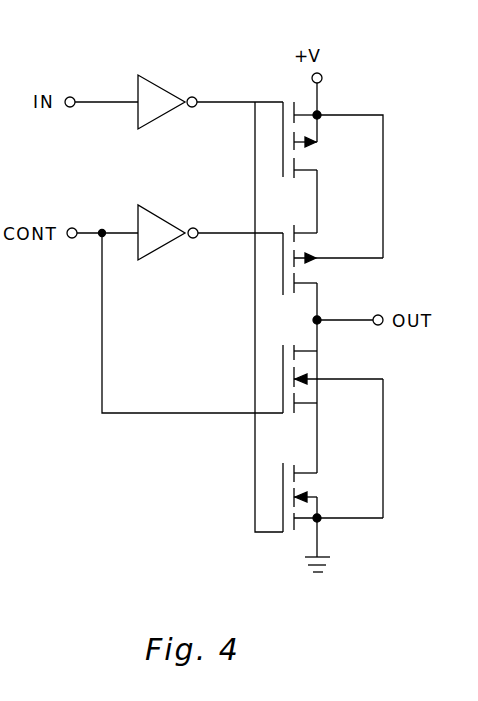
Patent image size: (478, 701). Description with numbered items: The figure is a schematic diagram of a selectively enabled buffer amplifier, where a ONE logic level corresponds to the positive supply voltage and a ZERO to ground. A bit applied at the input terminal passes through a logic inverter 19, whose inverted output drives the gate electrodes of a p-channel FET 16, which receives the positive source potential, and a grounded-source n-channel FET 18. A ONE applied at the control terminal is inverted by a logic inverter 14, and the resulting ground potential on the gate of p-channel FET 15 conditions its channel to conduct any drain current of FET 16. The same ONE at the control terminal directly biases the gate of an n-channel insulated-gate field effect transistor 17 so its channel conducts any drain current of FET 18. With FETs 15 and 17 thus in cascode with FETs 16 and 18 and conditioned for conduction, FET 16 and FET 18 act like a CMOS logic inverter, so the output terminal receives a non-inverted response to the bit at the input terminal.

The logic inverter 14 is at (173, 221).
The p-channel FET 15 is at (318, 263).
The p-channel FET 16 is at (320, 147).
The n-channel insulated-gate field effect transistor 17 is at (325, 372).
The n-channel FET 18 is at (323, 498).
The logic inverter 19 is at (170, 91).